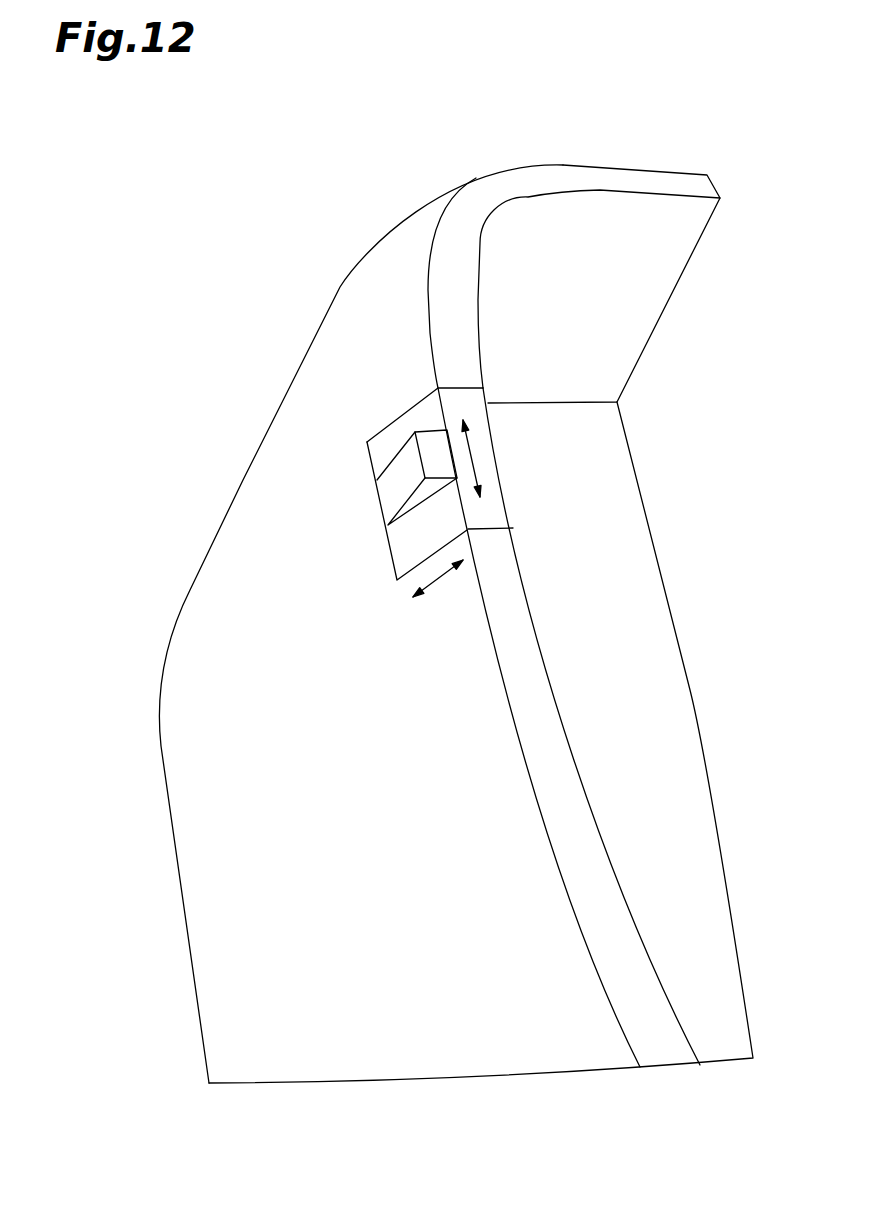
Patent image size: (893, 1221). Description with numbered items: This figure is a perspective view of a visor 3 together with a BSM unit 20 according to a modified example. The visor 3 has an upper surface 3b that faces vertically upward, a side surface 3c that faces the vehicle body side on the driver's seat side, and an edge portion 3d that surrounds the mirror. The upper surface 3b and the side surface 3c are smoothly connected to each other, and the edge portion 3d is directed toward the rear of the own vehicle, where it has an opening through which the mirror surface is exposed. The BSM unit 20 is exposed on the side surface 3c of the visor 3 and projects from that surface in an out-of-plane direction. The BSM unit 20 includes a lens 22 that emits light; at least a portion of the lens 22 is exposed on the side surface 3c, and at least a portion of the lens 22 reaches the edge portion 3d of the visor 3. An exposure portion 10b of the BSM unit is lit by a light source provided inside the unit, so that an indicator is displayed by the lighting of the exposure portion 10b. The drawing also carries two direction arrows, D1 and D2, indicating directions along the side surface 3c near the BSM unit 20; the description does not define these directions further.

The visor 3 is at (470, 178).
The upper surface 3b is at (658, 172).
The side surface 3c is at (287, 423).
The edge portion 3d is at (507, 567).
The exposure portion 10b is at (415, 432).
The BSM unit 20 is at (410, 407).
The lens 22 is at (415, 492).
The first direction D1 is at (473, 460).
The second direction D2 is at (438, 588).